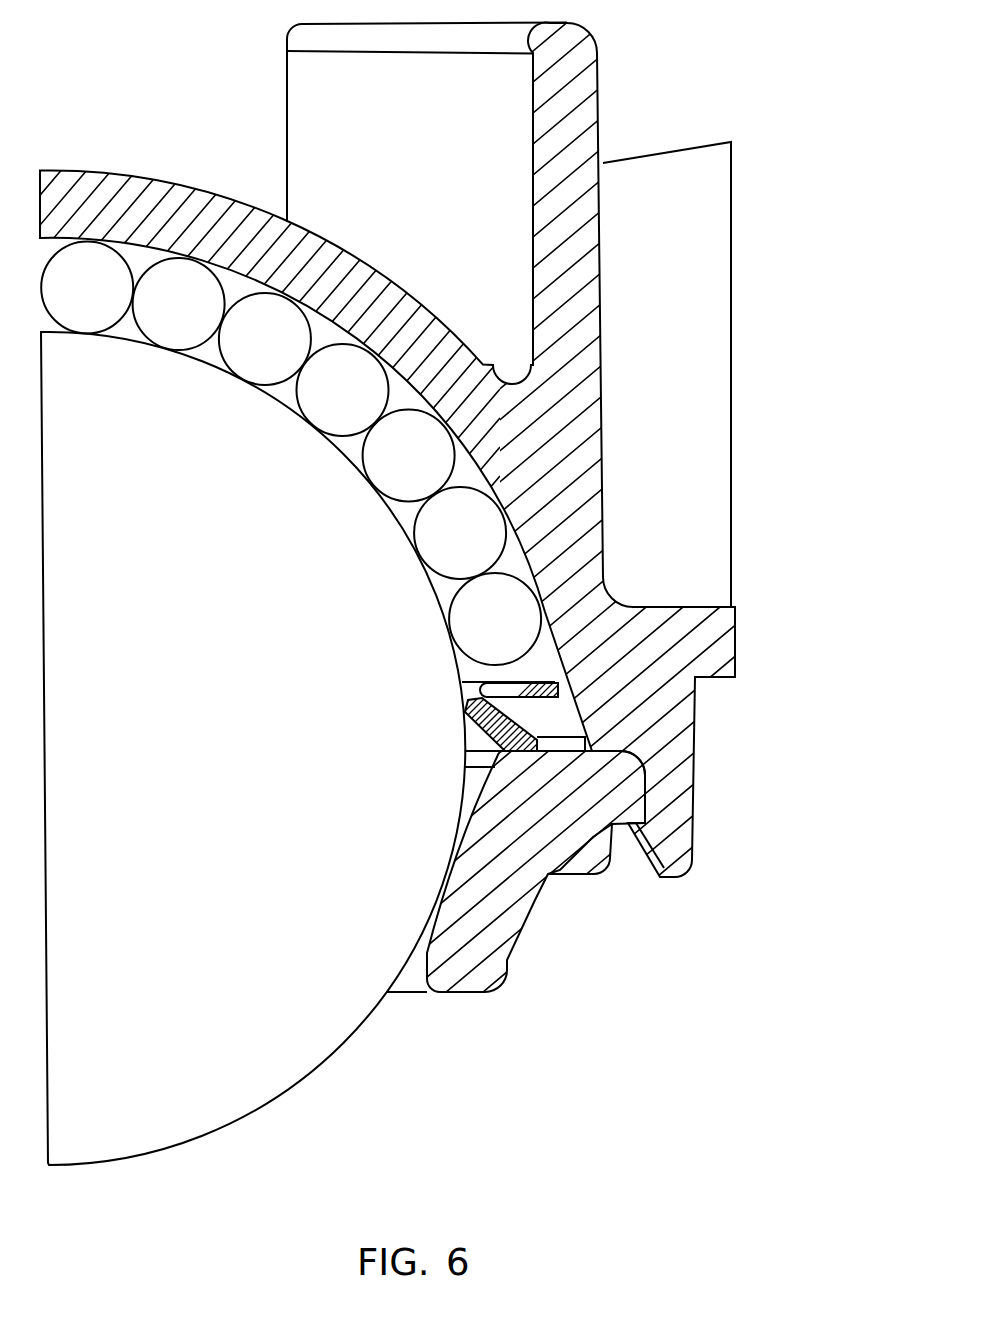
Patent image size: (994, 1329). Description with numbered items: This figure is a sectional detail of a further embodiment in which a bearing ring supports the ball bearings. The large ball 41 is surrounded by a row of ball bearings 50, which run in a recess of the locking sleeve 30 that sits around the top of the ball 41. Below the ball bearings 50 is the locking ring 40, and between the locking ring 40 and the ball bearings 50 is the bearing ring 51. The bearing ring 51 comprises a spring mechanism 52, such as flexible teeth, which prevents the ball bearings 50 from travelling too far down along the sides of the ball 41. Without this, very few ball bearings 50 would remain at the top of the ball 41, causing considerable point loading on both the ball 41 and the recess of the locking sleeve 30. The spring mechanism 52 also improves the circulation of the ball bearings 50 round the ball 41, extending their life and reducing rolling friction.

The locking sleeve 30 is at (572, 308).
The locking ring 40 is at (493, 943).
The ball 41 is at (340, 1007).
The ball bearings 50 is at (500, 617).
The bearing ring 51 is at (555, 682).
The spring mechanism 52 is at (549, 751).